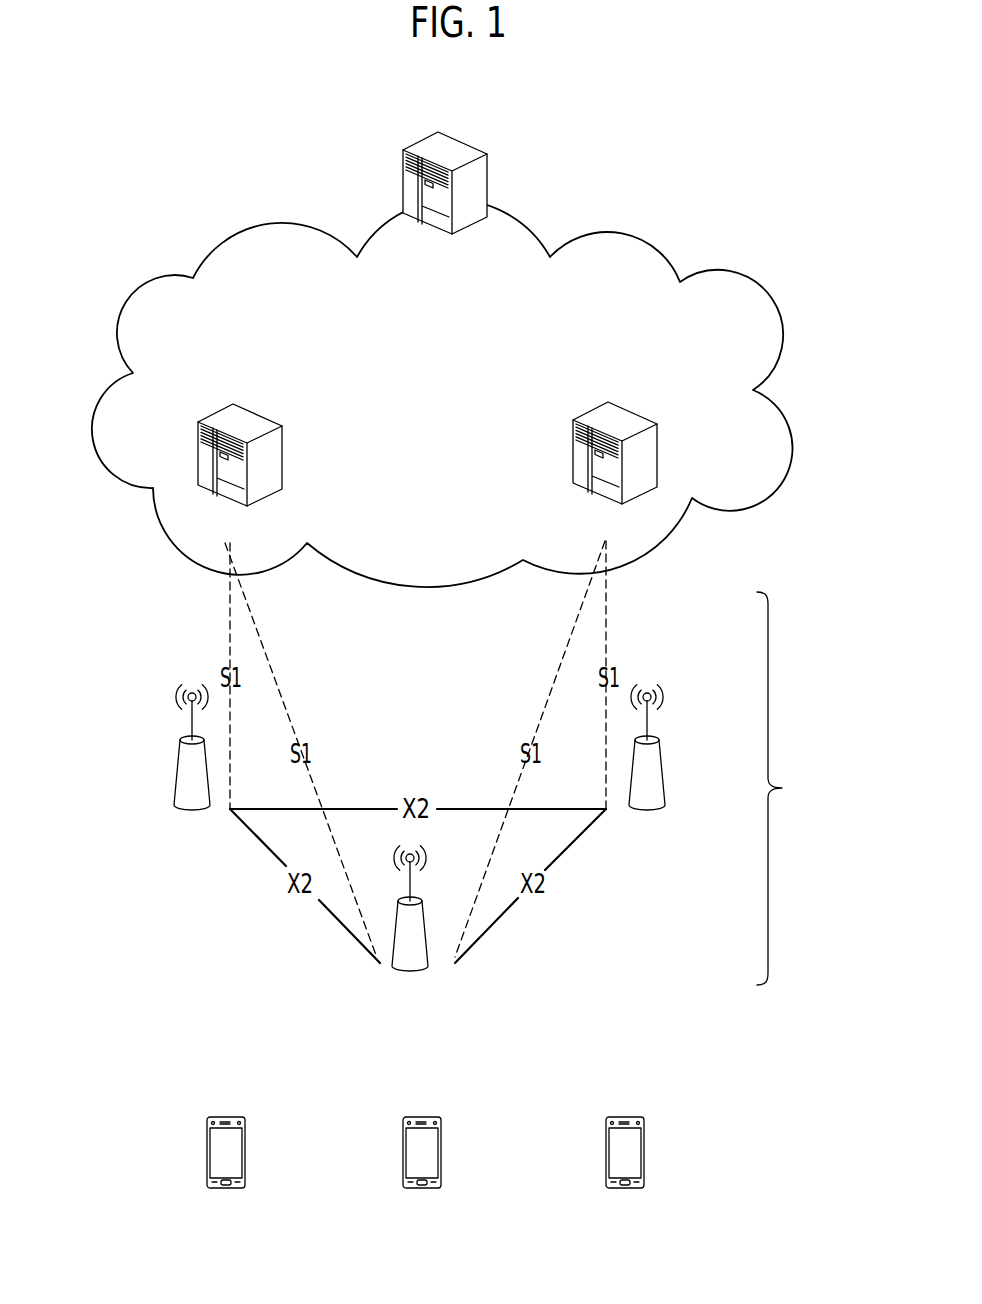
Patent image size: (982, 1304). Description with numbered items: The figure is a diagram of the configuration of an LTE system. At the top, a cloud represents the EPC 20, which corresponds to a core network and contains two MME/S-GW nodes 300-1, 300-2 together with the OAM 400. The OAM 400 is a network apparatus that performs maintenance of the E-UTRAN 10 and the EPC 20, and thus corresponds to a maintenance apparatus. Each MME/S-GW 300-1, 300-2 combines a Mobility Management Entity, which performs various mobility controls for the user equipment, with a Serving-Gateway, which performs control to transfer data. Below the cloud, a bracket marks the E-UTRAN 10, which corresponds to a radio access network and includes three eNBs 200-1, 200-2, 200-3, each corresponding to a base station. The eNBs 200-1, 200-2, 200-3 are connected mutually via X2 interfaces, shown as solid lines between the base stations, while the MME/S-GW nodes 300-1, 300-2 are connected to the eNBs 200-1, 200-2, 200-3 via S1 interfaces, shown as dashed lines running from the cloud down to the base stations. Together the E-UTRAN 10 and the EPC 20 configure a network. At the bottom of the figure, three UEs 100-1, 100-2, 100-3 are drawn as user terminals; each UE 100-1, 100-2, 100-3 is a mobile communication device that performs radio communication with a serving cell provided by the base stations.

The E-UTRAN 10 is at (821, 788).
The EPC 20 is at (658, 244).
The UE 100-1 is at (240, 1114).
The UE 100-2 is at (458, 1088).
The UE 100-3 is at (639, 1114).
The eNB 200-1 is at (177, 775).
The eNB 200-2 is at (427, 940).
The eNB 200-3 is at (661, 753).
The MME/S-GW 300-1 is at (263, 414).
The MME/S-GW 300-2 is at (643, 397).
The OAM 400 is at (478, 152).